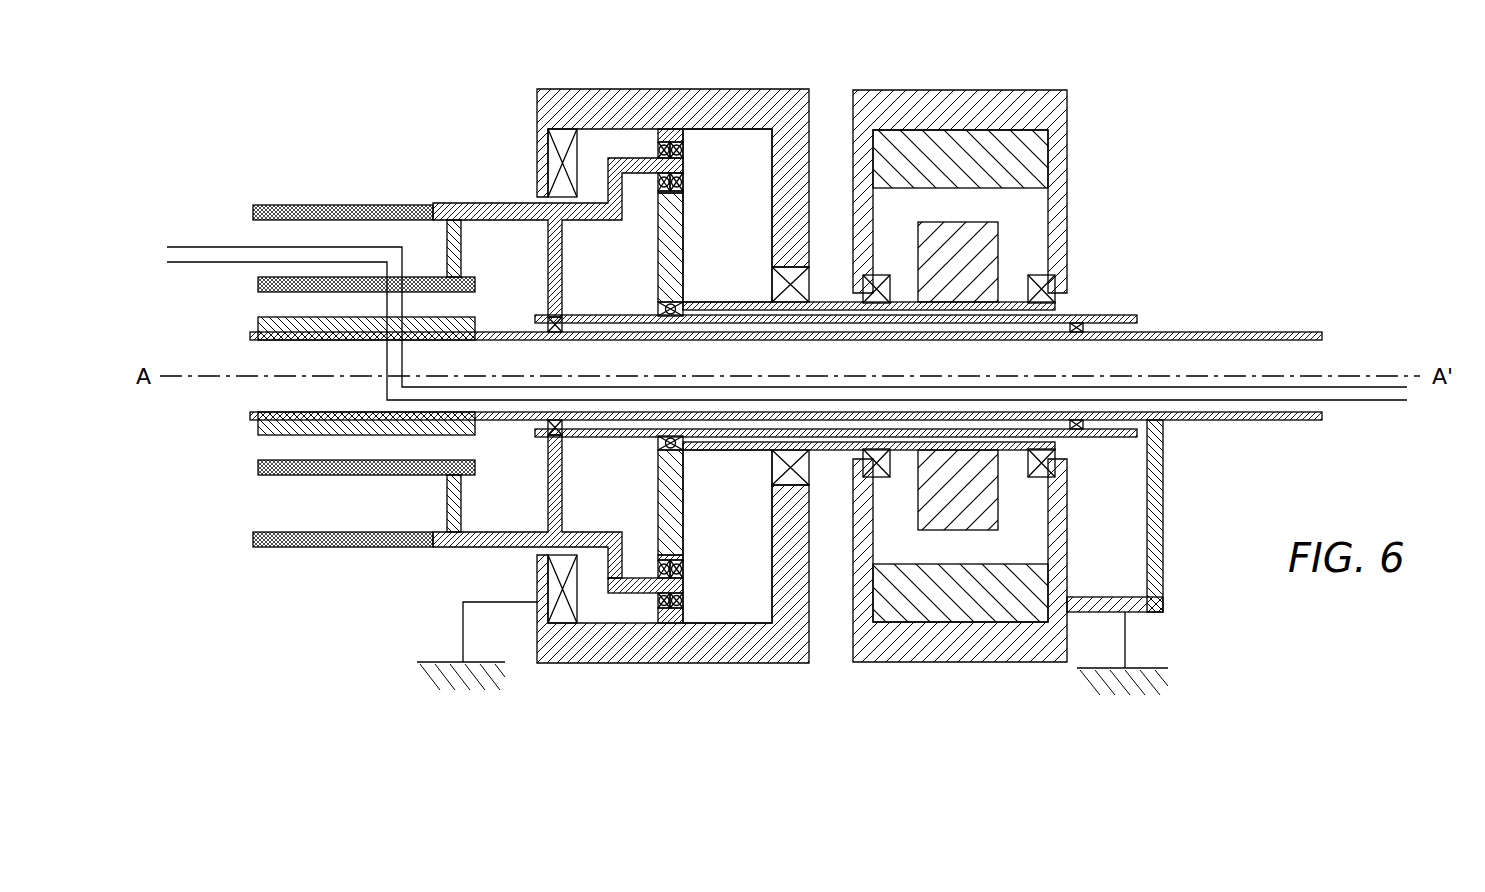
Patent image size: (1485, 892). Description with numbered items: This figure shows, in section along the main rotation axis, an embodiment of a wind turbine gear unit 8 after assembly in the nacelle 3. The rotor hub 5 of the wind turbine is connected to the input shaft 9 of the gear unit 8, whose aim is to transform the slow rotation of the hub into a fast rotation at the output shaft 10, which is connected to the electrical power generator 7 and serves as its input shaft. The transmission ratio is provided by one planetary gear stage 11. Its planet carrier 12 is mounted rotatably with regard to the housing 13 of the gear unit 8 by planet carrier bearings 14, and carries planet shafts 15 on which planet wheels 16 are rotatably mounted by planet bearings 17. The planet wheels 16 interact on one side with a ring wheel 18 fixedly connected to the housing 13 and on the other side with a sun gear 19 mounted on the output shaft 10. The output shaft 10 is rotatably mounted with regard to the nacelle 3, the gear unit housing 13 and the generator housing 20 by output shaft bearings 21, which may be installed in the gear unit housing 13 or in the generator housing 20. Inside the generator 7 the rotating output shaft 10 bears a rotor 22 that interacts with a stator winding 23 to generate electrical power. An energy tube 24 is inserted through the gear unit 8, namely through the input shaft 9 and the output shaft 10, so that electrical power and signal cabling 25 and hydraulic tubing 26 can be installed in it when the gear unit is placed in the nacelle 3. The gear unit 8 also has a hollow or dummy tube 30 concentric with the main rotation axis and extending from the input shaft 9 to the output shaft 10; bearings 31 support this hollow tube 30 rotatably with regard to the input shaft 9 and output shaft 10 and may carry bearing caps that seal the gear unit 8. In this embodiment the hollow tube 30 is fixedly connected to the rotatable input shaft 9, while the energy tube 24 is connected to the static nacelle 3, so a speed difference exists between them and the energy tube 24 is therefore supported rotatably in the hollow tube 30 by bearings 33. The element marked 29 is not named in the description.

The nacelle 3 is at (1161, 668).
The rotor hub 5 is at (330, 205).
The electrical power generator 7 is at (917, 360).
The gear unit 8 is at (591, 80).
The input shaft 9 is at (500, 203).
The output shaft 10 is at (820, 302).
The planetary gear stage 11 is at (716, 158).
The planet carrier 12 is at (592, 537).
The housing 13 is at (690, 652).
The planet carrier bearings 14 is at (556, 590).
The planet shafts 15 is at (643, 580).
The planet wheels 16 is at (683, 558).
The planet bearings 17 is at (683, 574).
The ring wheel 18 is at (683, 617).
The sun gear 19 is at (658, 280).
The electrical power generator housing 20 is at (1056, 117).
The output shaft bearings 21 is at (775, 466).
The rotor 22 is at (967, 525).
The stator winding 23 is at (1012, 138).
The energy tube 24 is at (1228, 332).
The electrical power and signal cabling 25 is at (226, 247).
The hydraulic tubing 26 is at (182, 262).
The coil assembly 29 is at (232, 474).
The hollow tube 30 is at (685, 428).
The bearings 31 is at (793, 298).
The bearings 33 is at (549, 320).